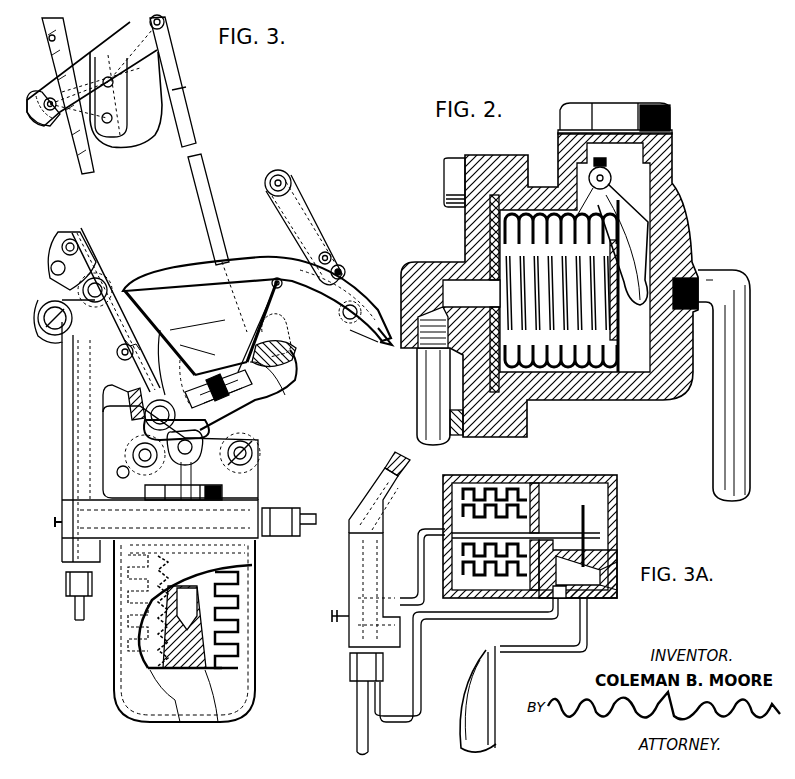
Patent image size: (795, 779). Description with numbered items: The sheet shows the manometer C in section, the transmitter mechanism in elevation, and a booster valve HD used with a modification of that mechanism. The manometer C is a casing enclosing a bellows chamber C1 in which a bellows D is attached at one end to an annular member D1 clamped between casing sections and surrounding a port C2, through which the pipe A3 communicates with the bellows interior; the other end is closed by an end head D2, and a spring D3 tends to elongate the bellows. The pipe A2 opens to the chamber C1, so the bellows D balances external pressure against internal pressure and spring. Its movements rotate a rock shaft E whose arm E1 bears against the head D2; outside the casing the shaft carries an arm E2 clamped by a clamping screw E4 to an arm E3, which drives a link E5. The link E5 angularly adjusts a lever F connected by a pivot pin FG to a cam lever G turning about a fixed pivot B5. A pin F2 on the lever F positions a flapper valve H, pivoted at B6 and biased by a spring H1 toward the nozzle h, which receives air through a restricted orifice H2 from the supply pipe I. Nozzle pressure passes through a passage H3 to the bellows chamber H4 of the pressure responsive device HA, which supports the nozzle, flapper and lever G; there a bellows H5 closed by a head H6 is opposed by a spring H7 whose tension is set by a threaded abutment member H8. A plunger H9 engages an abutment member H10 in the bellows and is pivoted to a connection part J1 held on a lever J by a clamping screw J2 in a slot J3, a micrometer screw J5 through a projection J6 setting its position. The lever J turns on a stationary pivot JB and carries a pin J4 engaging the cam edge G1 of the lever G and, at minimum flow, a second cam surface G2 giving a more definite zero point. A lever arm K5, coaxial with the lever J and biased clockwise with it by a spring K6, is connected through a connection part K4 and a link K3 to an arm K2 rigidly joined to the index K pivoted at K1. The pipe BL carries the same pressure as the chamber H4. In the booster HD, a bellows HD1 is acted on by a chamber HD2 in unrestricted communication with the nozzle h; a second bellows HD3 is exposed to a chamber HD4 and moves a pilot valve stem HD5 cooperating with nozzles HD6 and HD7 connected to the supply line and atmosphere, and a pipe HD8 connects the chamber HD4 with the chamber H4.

In FIG. 3, the index K is at (62, 149).
In FIG. 3, the index pivot K1 is at (46, 113).
In FIG. 3, the arm K2 is at (146, 133).
In FIG. 3, the link K3 is at (188, 106).
In FIG. 3, the connection part K4 is at (277, 321).
In FIG. 3, the lever arm K5 is at (284, 402).
In FIG. 3, the spring K6 is at (144, 442).
In FIG. 3, the rock shaft E is at (292, 177).
In FIG. 2, the rock shaft E is at (612, 176).
In FIG. 2, the arm E1 is at (662, 203).
In FIG. 3, the arm E2 is at (311, 221).
In FIG. 3, the arm E3 is at (345, 273).
In FIG. 3, the clamping screw E4 is at (330, 251).
In FIG. 3, the link E5 is at (324, 330).
In FIG. 3, the cam lever G is at (182, 266).
In FIG. 3, the cam edge G1 is at (354, 335).
In FIG. 3, the second cam surface G2 is at (374, 330).
In FIG. 3, the lever J is at (222, 340).
In FIG. 3, the connection part J1 is at (258, 432).
In FIG. 3, the clamping screw J2 is at (164, 339).
In FIG. 3, the slot J3 is at (174, 361).
In FIG. 3, the pin J4 is at (266, 268).
In FIG. 3, the micrometer screw J5 is at (238, 385).
In FIG. 3, the projection J6 is at (200, 401).
In FIG. 3, the stationary pivot JB is at (108, 452).
In FIG. 3, the fixed pivot B5 is at (62, 291).
In FIG. 3, the pivot B6 is at (64, 242).
In FIG. 3, the flapper valve H is at (100, 265).
In FIG. 3, the spring H1 is at (51, 267).
In FIG. 3, the restricted orifice H2 is at (68, 527).
In FIG. 3A, the restricted orifice H2 is at (354, 608).
In FIG. 3, the passage H3 is at (110, 548).
In FIG. 3, the bellows chamber H4 is at (125, 628).
In FIG. 3A, the bellows chamber H4 is at (470, 718).
In FIG. 3, the bellows element H5 is at (125, 653).
In FIG. 3, the head H6 is at (183, 712).
In FIG. 3, the spring H7 is at (218, 712).
In FIG. 3, the threaded abutment member H8 is at (252, 565).
In FIG. 3, the plunger H9 is at (258, 481).
In FIG. 3, the abutment member H10 is at (232, 638).
In FIG. 3, the flapper adjusting pressure responsive device HA is at (148, 714).
In FIG. 3, the lever F is at (108, 325).
In FIG. 3, the pin F2 is at (45, 302).
In FIG. 3, the pivot pin FG is at (116, 352).
In FIG. 3, the nozzle h is at (108, 371).
In FIG. 3A, the nozzle h is at (393, 450).
In FIG. 3, the compressed air supply pipe I is at (74, 603).
In FIG. 3A, the compressed air supply pipe I is at (357, 700).
In FIG. 3, the pipe BL is at (305, 517).
In FIG. 2, the manometer C is at (680, 238).
In FIG. 2, the bellows chamber C1 is at (592, 394).
In FIG. 2, the port C2 is at (455, 283).
In FIG. 2, the bellows D is at (560, 396).
In FIG. 2, the annular member D1 is at (490, 220).
In FIG. 2, the end head D2 is at (620, 323).
In FIG. 2, the spring D3 is at (620, 348).
In FIG. 2, the pipe A2 is at (722, 454).
In FIG. 2, the pipe A3 is at (415, 388).
In FIG. 3A, the booster valve HD is at (617, 458).
In FIG. 3A, the bellows element HD1 is at (470, 488).
In FIG. 3A, the chamber HD2 is at (445, 527).
In FIG. 3A, the second bellows HD3 is at (500, 590).
In FIG. 3A, the second chamber HD4 is at (545, 488).
In FIG. 3A, the pilot valve stem HD5 is at (545, 534).
In FIG. 3A, the nozzle HD6 is at (617, 588).
In FIG. 3A, the nozzle HD7 is at (615, 558).
In FIG. 3A, the pipe HD8 is at (590, 620).